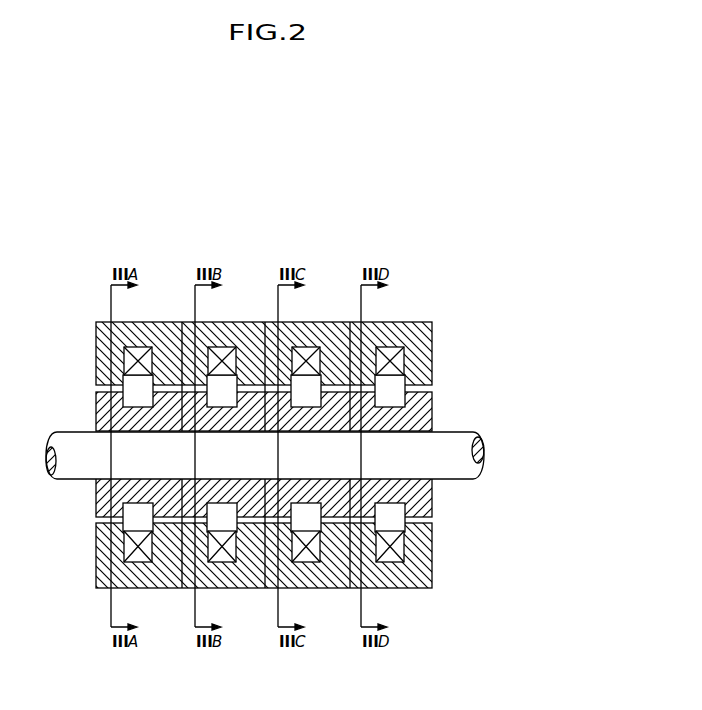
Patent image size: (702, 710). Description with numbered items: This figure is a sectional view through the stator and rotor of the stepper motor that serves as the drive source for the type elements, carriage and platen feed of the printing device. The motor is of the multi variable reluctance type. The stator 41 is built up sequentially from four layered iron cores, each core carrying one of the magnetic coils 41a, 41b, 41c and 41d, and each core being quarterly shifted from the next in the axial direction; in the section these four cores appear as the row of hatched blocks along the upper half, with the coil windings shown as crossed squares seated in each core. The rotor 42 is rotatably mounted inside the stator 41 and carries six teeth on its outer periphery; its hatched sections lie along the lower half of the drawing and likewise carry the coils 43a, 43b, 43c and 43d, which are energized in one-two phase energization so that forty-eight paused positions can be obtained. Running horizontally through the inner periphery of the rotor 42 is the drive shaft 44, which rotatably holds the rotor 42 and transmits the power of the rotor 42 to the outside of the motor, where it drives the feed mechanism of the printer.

The stator 41 is at (338, 331).
The magnetic coil 41a is at (152, 322).
The magnetic coil 41b is at (236, 322).
The magnetic coil 41c is at (320, 322).
The magnetic coil 41d is at (404, 322).
The rotor 42 is at (339, 495).
The coil 43a is at (137, 558).
The coil 43b is at (221, 558).
The coil 43c is at (305, 558).
The coil 43d is at (389, 558).
The drive shaft 44 is at (457, 445).